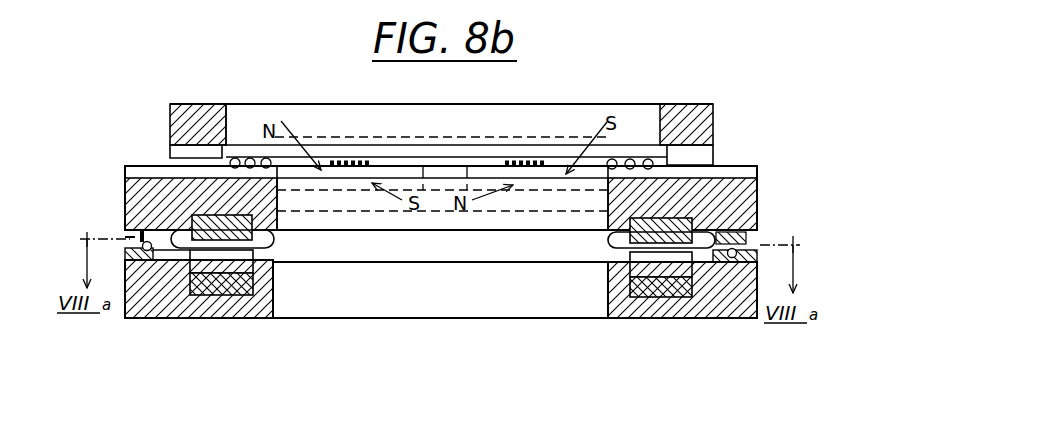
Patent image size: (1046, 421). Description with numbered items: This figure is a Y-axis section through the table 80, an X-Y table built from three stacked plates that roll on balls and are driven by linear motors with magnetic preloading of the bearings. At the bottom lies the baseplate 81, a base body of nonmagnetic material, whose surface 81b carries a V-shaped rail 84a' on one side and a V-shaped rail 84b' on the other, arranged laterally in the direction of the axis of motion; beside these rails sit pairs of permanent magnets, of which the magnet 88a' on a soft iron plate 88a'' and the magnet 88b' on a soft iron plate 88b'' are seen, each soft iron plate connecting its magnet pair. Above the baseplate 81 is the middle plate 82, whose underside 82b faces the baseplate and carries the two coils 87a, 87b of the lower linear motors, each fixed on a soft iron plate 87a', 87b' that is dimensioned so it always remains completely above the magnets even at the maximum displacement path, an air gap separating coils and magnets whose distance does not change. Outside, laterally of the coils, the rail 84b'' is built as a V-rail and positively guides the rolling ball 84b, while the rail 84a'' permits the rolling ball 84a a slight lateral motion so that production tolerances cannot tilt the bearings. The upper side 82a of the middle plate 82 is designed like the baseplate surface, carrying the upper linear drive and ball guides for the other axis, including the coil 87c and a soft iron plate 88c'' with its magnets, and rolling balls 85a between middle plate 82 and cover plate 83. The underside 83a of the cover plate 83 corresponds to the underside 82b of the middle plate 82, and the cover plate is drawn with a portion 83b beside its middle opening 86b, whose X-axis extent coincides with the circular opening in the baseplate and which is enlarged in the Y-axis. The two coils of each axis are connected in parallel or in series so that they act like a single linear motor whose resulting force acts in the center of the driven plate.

The table 80 is at (779, 141).
The baseplate 81 is at (623, 302).
The surface of the baseplate 81b is at (605, 286).
The middle plate 82 is at (748, 213).
The upper side of the middle plate 82a is at (478, 162).
The underside of the middle plate 82b is at (513, 240).
The cover plate 83 is at (713, 127).
The underside of the cover plate 83a is at (502, 163).
The top plate portion 83b is at (627, 104).
The rolling ball 84a is at (199, 309).
The V-shaped rail 84a' is at (157, 316).
The rail 84a'' is at (108, 214).
The rolling ball 84b is at (682, 326).
The V-shaped rail 84b' is at (735, 304).
The V-rail 84b'' is at (782, 225).
The balls 85a is at (241, 158).
The middle opening 86b is at (323, 104).
The coil 87a is at (253, 309).
The soft iron plate 87a' is at (149, 170).
The coil 87b is at (617, 295).
The soft iron plate 87b' is at (787, 190).
The coil 87c is at (358, 158).
The permanent magnet 88a' is at (245, 279).
The soft iron plate 88a'' is at (226, 317).
The permanent magnet 88b' is at (663, 288).
The soft iron plate 88b'' is at (655, 321).
The soft iron plate 88c'' is at (442, 254).